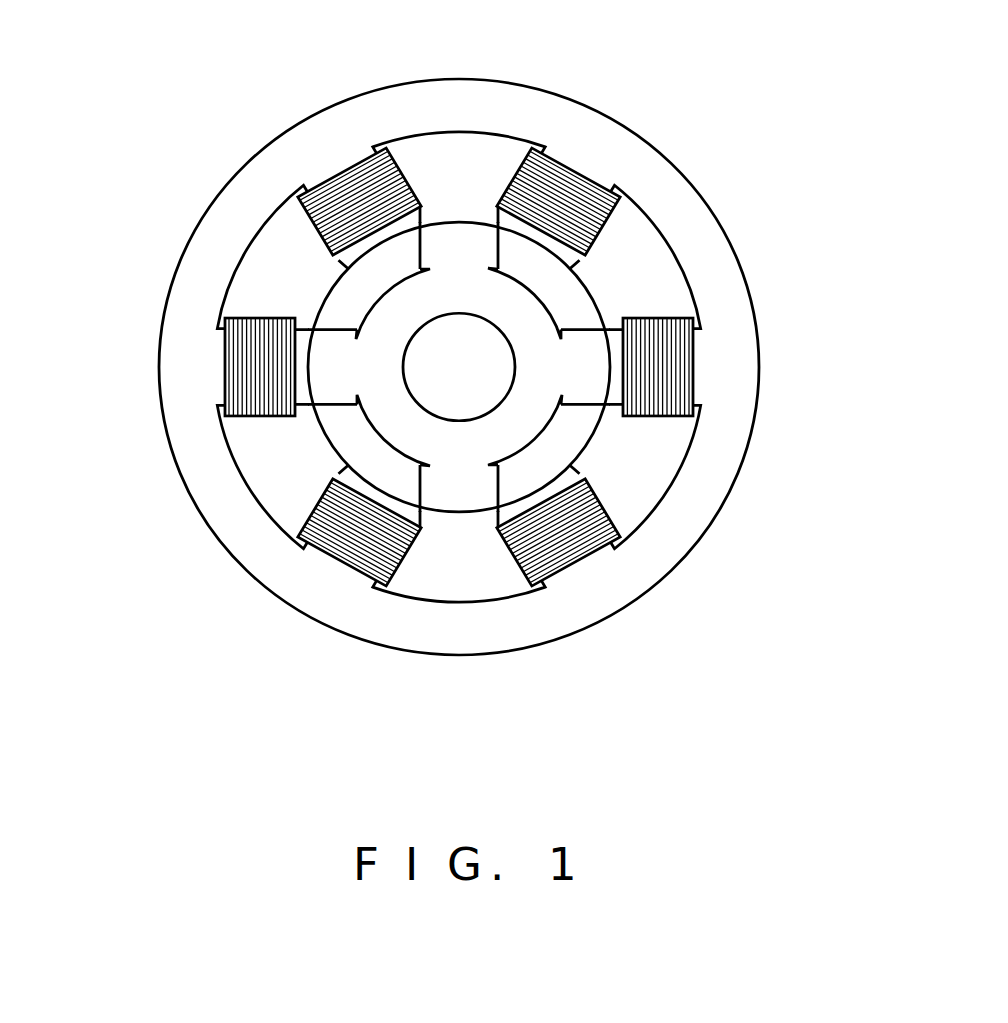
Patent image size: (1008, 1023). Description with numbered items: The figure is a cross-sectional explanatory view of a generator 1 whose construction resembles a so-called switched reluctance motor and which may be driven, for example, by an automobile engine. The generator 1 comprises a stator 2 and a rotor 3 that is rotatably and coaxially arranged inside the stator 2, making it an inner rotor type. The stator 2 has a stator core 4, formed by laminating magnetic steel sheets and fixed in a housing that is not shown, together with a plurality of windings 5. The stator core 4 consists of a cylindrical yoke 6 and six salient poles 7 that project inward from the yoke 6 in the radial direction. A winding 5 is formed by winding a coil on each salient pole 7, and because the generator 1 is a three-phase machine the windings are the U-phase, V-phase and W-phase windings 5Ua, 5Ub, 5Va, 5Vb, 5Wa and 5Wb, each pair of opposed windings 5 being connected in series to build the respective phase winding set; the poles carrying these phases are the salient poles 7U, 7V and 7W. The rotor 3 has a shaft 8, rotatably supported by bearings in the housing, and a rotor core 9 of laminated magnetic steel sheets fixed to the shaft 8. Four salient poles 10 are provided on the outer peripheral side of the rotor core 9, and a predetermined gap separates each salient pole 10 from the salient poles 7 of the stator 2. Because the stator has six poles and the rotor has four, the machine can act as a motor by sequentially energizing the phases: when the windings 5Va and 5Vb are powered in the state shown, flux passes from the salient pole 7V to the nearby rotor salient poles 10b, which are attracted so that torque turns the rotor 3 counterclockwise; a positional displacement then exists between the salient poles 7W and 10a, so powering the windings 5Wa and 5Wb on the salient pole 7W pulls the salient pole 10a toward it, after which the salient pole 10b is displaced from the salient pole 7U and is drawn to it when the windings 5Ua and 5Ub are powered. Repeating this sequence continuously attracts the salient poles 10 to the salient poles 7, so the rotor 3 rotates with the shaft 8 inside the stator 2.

The generator 1 is at (647, 105).
The stator 2 is at (761, 287).
The rotor 3 is at (351, 425).
The stator core 4 is at (733, 420).
The winding 5 is at (471, 368).
The U-phase winding 5Ua is at (665, 366).
The U-phase winding 5Ub is at (255, 386).
The V-phase winding 5Va is at (572, 543).
The V-phase winding 5Vb is at (352, 193).
The W-phase winding 5Wa is at (347, 540).
The W-phase winding 5Wb is at (565, 190).
The yoke 6 is at (245, 212).
The salient pole 7 is at (342, 262).
The U-phase salient pole 7U is at (307, 343).
The V-phase salient pole 7V is at (393, 233).
The W-phase salient pole 7W is at (527, 233).
The shaft 8 is at (488, 380).
The rotor core 9 is at (527, 325).
The salient pole 10 is at (440, 371).
The salient pole 10a is at (352, 404).
The salient pole 10b is at (453, 248).